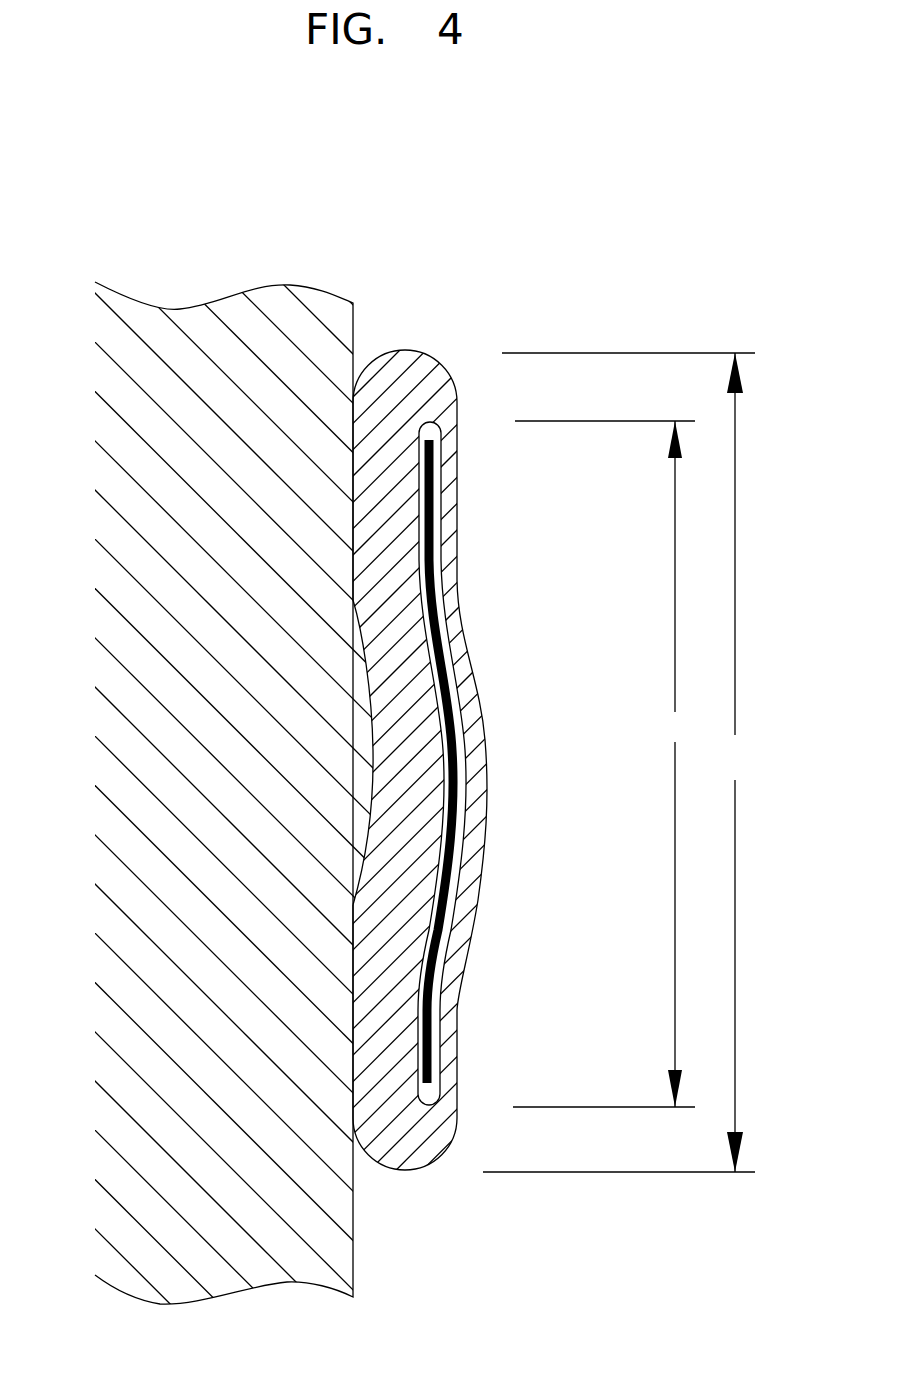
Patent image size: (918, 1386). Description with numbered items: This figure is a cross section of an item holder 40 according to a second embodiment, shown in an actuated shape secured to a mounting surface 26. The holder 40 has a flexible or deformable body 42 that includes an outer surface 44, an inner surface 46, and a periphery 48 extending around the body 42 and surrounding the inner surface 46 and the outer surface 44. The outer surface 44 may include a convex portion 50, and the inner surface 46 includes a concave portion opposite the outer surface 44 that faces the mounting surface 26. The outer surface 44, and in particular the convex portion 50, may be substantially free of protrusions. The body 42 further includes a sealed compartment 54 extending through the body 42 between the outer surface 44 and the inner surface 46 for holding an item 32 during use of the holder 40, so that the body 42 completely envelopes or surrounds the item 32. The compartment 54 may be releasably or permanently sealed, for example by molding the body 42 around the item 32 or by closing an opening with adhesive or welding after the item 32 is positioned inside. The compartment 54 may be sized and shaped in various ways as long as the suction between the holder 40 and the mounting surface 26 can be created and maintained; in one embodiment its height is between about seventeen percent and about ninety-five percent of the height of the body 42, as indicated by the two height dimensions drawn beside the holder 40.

The mounting surface 26 is at (362, 1267).
The item 32 is at (440, 487).
The item holder 40 is at (555, 719).
The flexible body 42 is at (452, 1048).
The outer surface 44 is at (483, 918).
The inner surface 46 is at (352, 1060).
The periphery 48 is at (384, 1172).
The convex portion 50 is at (482, 688).
The sealed compartment 54 is at (442, 420).